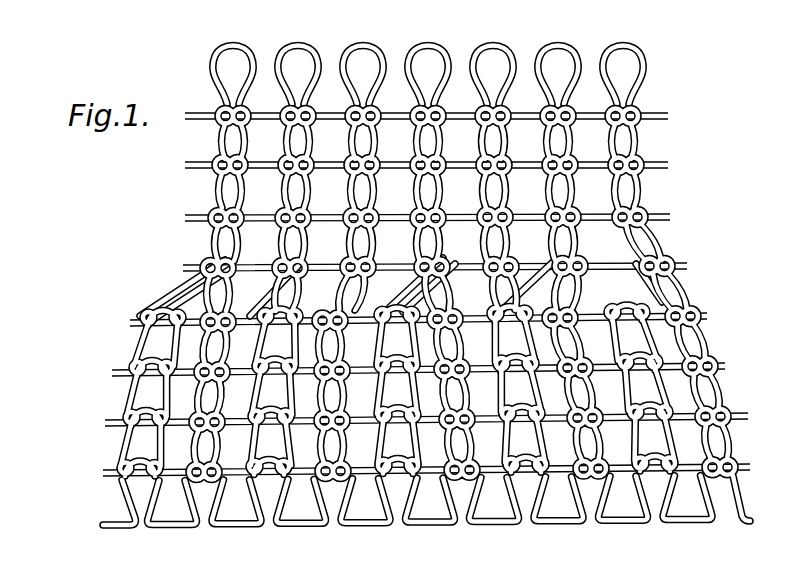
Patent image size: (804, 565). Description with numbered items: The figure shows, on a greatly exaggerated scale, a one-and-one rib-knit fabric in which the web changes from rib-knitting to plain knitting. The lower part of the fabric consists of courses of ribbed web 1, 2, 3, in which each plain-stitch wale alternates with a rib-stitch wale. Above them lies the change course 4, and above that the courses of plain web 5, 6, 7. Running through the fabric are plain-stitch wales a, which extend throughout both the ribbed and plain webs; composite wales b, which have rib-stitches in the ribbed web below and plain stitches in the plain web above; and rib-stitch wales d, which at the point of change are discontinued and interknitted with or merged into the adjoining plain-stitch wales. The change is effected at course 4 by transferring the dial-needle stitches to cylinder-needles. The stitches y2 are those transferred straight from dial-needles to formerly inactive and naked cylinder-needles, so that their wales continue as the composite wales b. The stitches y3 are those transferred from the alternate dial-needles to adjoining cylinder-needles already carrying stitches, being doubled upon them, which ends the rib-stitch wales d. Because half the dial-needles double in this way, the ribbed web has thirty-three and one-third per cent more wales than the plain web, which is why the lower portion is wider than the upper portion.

The course of ribbed web 1 is at (423, 435).
The course of ribbed web 2 is at (416, 383).
The course of ribbed web 3 is at (415, 331).
The change course 4 is at (422, 279).
The course of plain web 5 is at (431, 231).
The course of plain web 6 is at (427, 179).
The course of plain web 7 is at (426, 130).
The plain-stitch wales a is at (462, 287).
The composite wales b is at (423, 287).
The rib-stitch wales d is at (423, 516).
The transferred stitches y2 is at (401, 289).
The doubled stitches y3 is at (401, 289).